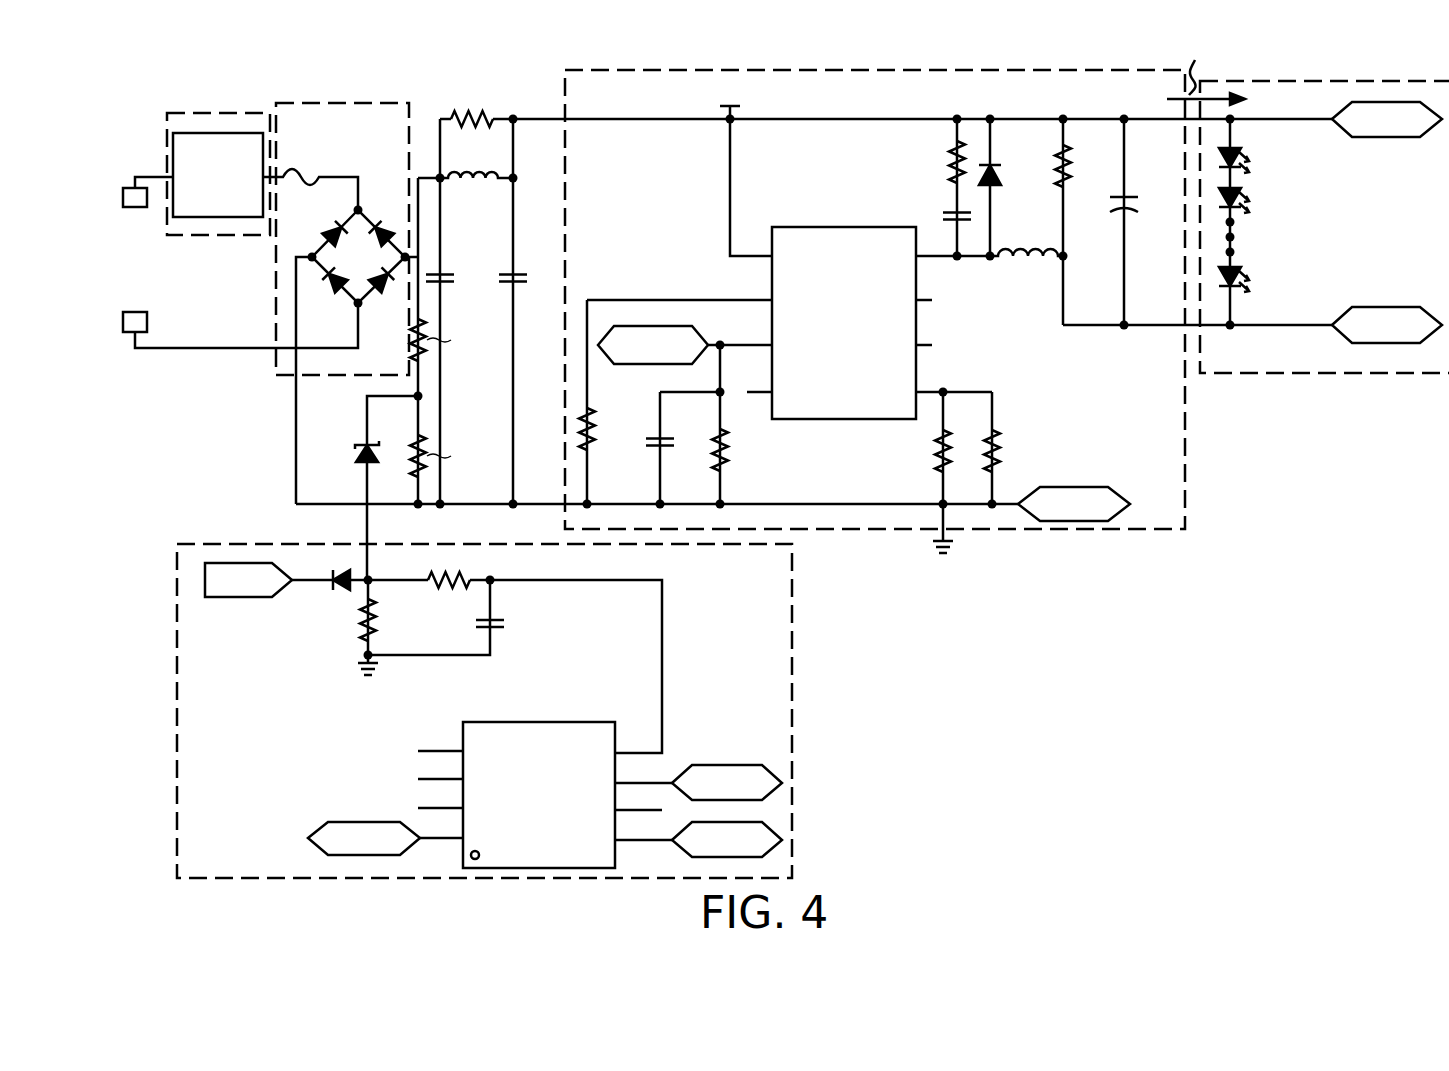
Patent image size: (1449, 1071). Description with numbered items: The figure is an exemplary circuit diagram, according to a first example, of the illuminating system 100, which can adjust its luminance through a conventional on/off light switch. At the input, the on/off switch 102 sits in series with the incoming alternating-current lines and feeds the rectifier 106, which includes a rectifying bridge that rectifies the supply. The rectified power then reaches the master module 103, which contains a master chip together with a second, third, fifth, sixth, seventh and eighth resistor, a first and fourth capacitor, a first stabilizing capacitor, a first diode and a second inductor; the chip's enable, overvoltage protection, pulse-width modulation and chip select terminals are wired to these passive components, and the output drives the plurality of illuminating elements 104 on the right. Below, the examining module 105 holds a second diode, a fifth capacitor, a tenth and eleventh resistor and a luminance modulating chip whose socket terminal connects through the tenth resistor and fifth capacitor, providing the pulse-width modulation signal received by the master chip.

The illuminating system 100 is at (1146, 710).
The on/off switch 102 is at (213, 113).
The master module 103 is at (980, 70).
The illuminating elements 104 is at (1335, 80).
The examining module 105 is at (795, 675).
The rectifier 106 is at (340, 103).